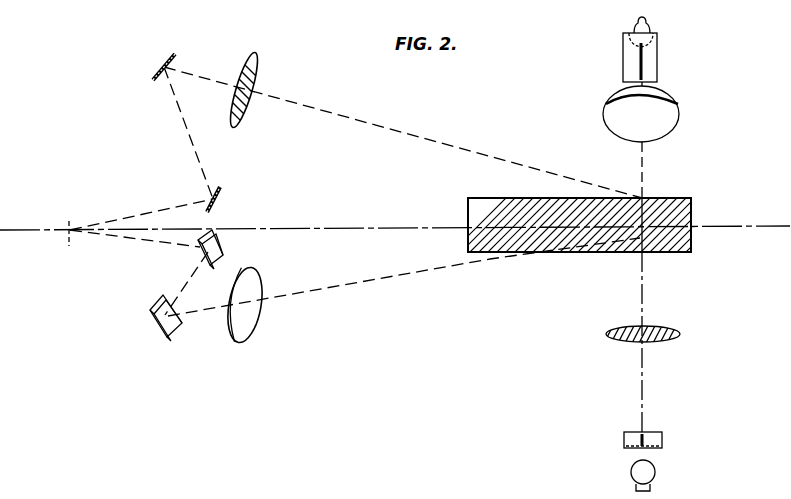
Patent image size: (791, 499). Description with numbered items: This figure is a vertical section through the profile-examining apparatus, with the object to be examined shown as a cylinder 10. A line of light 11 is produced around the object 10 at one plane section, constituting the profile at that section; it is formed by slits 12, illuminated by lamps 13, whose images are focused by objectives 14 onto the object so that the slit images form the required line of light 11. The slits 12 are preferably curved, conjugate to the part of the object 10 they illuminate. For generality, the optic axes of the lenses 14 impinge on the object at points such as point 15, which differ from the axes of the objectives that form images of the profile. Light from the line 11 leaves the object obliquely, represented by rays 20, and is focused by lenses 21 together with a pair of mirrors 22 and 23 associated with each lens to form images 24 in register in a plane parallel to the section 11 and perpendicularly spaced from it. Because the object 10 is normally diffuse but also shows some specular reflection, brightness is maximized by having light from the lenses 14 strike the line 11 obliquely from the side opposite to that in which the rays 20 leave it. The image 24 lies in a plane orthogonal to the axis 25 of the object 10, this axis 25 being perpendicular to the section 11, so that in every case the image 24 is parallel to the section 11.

The cylinder 10 is at (472, 208).
The line of light 11 is at (646, 213).
The slits 12 is at (641, 62).
The lamps 13 is at (630, 33).
The objectives 14 is at (666, 112).
The point 15 is at (644, 252).
The rays 20 is at (414, 134).
The lenses 21 is at (258, 62).
The mirror 22 is at (172, 0).
The mirror 23 is at (220, 187).
The image 24 is at (69, 225).
The axis 25 is at (368, 227).